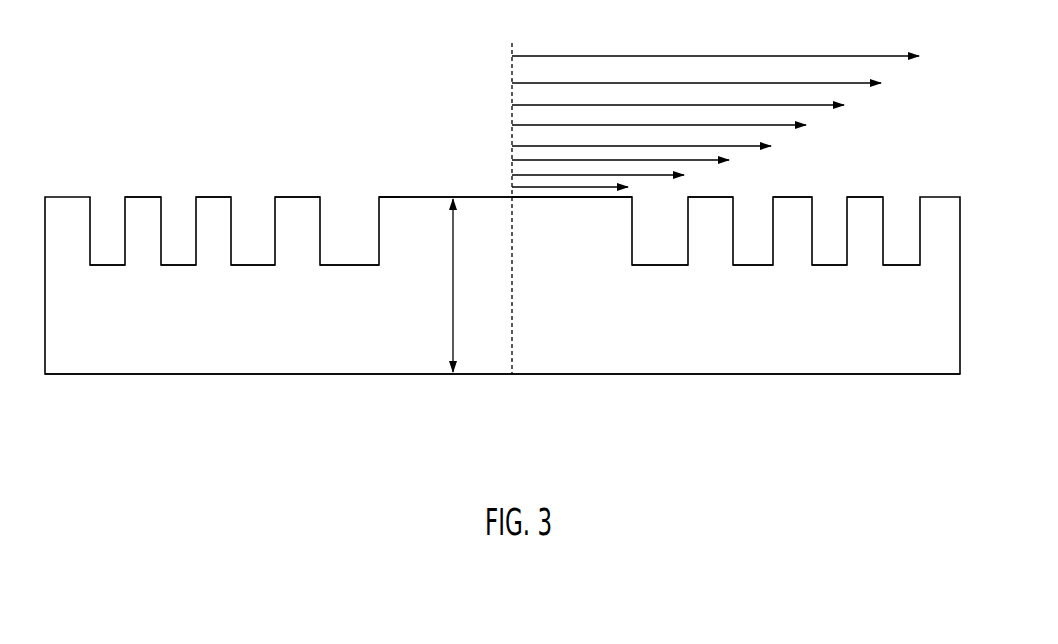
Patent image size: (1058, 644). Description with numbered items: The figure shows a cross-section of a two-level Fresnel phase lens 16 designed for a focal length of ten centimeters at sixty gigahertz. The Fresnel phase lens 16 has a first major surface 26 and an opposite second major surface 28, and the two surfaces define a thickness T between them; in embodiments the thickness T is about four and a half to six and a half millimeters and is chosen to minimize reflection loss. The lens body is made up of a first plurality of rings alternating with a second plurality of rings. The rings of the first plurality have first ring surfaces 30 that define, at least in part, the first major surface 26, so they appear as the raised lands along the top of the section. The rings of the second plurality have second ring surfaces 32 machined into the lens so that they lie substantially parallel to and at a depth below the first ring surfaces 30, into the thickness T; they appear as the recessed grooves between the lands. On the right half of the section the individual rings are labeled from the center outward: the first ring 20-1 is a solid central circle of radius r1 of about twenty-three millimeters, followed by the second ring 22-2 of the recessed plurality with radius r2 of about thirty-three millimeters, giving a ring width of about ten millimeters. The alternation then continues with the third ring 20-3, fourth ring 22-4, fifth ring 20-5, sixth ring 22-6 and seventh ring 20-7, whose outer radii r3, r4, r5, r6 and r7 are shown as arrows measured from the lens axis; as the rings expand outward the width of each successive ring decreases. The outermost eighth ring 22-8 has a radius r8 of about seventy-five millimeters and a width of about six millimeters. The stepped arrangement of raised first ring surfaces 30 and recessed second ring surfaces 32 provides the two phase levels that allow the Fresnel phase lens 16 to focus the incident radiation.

The Fresnel phase lens 16 is at (137, 115).
The first major surface 26 is at (406, 194).
The second major surface 28 is at (322, 376).
The first ring surfaces 30 is at (385, 197).
The second ring surfaces 32 is at (340, 265).
The thickness T is at (453, 297).
The radius of first ring r1 is at (581, 191).
The radius of second ring r2 is at (611, 181).
The radius of third ring r3 is at (633, 169).
The radius of fourth ring r4 is at (656, 153).
The radius of fifth ring r5 is at (672, 131).
The radius of sixth ring r6 is at (690, 113).
The radius of seventh ring r7 is at (710, 91).
The radius of eighth ring r8 is at (728, 69).
The first ring 20-1 is at (566, 197).
The second ring 22-2 is at (658, 265).
The third ring 20-3 is at (713, 197).
The fourth ring 22-4 is at (753, 265).
The fifth ring 20-5 is at (793, 197).
The sixth ring 22-6 is at (832, 265).
The seventh ring 20-7 is at (865, 197).
The eighth ring 22-8 is at (900, 265).